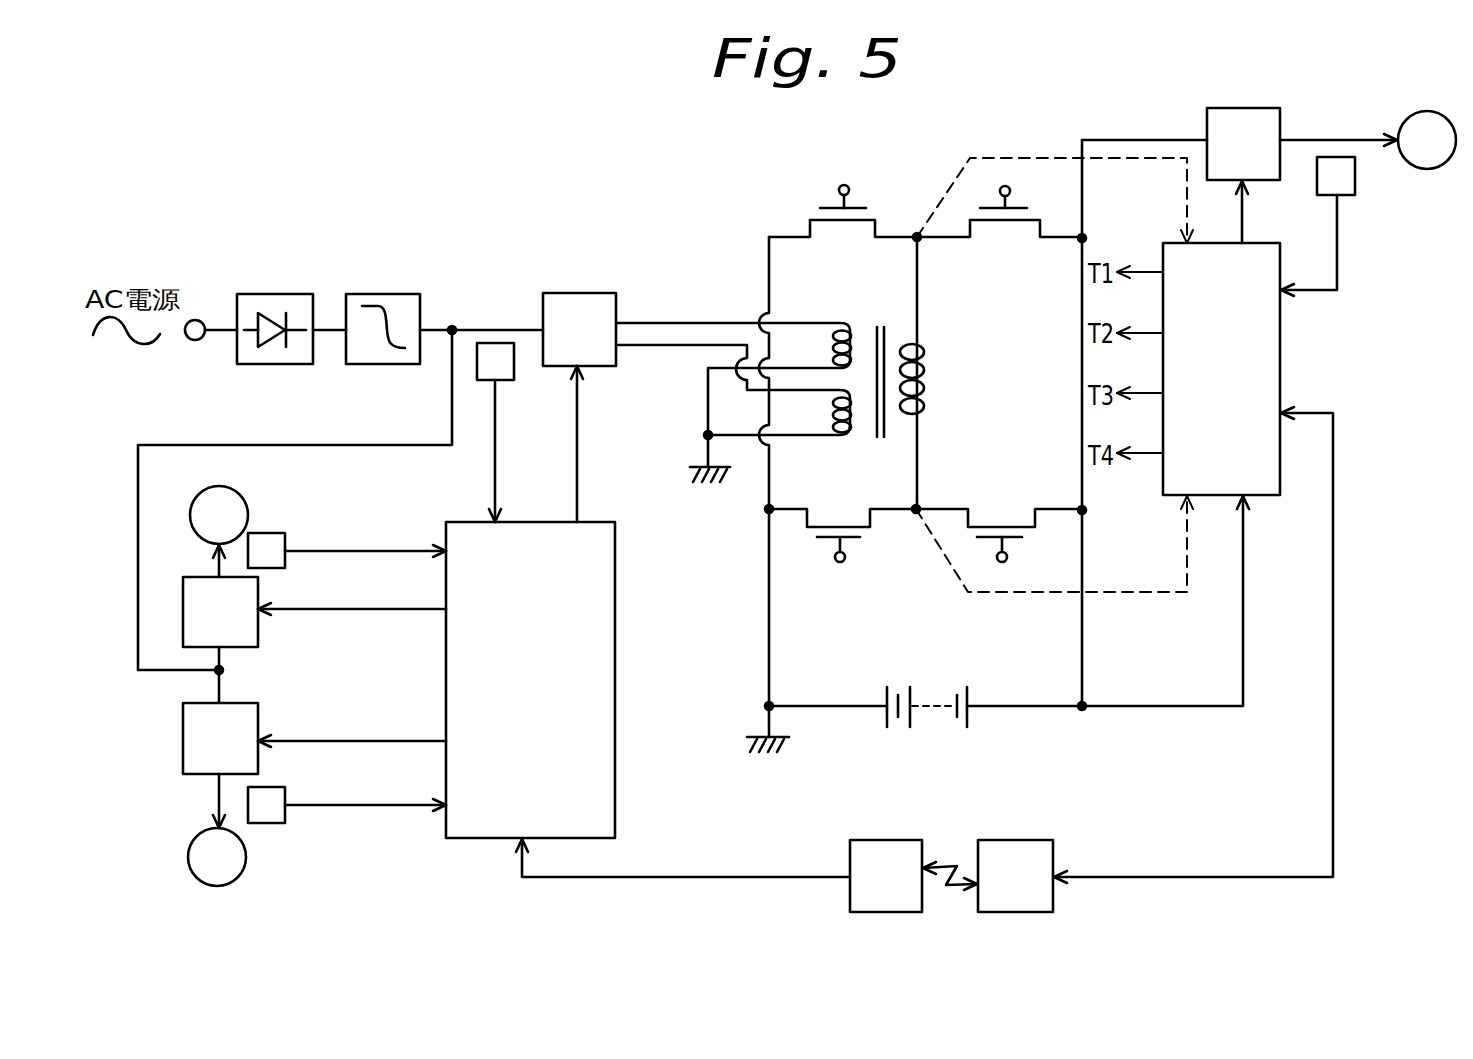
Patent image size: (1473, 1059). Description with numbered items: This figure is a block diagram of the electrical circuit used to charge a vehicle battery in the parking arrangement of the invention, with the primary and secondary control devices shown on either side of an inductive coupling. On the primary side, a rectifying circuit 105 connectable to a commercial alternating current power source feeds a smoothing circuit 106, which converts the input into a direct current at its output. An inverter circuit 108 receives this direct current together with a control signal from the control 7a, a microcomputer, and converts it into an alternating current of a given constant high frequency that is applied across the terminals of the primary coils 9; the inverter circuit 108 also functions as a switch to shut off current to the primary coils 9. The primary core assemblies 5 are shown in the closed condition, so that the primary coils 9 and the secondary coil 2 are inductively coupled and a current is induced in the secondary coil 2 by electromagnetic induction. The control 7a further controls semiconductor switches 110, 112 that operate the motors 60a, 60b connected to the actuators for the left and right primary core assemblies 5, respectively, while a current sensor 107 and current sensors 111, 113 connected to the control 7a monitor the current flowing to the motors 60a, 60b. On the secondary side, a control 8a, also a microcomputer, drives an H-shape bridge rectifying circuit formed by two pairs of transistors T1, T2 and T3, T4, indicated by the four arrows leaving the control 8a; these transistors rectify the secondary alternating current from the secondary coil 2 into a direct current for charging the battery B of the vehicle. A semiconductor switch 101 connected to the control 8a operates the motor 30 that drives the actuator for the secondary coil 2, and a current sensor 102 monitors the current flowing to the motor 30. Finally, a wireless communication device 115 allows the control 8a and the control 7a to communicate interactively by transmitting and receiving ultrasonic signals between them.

The rectifying circuit 105 is at (267, 300).
The smoothing circuit 106 is at (388, 302).
The current sensor 107 is at (507, 370).
The inverter circuit 108 is at (580, 303).
The primary coils 9 is at (833, 348).
The primary core assemblies 5 is at (877, 320).
The secondary coil 2 is at (927, 378).
The transistor T1 is at (838, 227).
The transistor T2 is at (1005, 227).
The transistor T3 is at (840, 528).
The transistor T4 is at (997, 528).
The battery B is at (940, 720).
The semiconductor switch 101 is at (1220, 125).
The motor 30 is at (1418, 123).
The current sensor 102 is at (1350, 177).
The control 8a is at (1270, 357).
The wireless communication device 115 is at (958, 842).
The control 7a is at (603, 787).
The motor 60b is at (242, 518).
The current sensor 113 is at (277, 542).
The semiconductor switch 112 is at (247, 593).
The semiconductor switch 110 is at (247, 718).
The current sensor 111 is at (270, 813).
The motor 60a is at (237, 863).